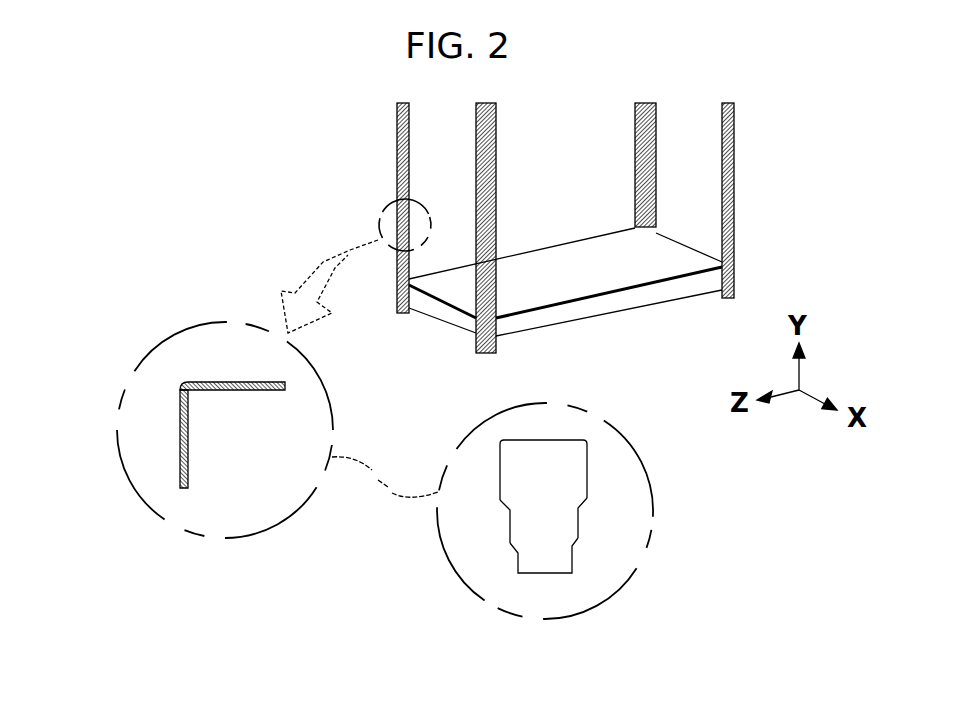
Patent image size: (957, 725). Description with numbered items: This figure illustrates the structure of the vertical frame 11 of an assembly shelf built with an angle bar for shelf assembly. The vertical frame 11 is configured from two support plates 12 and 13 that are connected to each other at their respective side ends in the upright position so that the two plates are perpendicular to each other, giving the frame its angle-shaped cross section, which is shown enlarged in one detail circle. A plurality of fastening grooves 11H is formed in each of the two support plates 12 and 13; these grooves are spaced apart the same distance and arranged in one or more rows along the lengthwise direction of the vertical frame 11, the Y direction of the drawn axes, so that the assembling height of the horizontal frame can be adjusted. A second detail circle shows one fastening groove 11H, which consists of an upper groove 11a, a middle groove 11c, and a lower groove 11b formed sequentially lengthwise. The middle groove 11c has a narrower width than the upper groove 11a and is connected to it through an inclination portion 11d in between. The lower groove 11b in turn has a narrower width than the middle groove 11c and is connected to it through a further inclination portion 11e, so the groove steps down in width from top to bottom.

The vertical frame 11 is at (171, 388).
The support plate 12 is at (222, 380).
The support plate 13 is at (181, 442).
The fastening groove 11H is at (545, 519).
The upper groove 11a is at (545, 470).
The lower groove 11b is at (493, 555).
The middle groove 11c is at (547, 528).
The inclination portion 11d is at (587, 505).
The inclination portion 11e is at (578, 543).